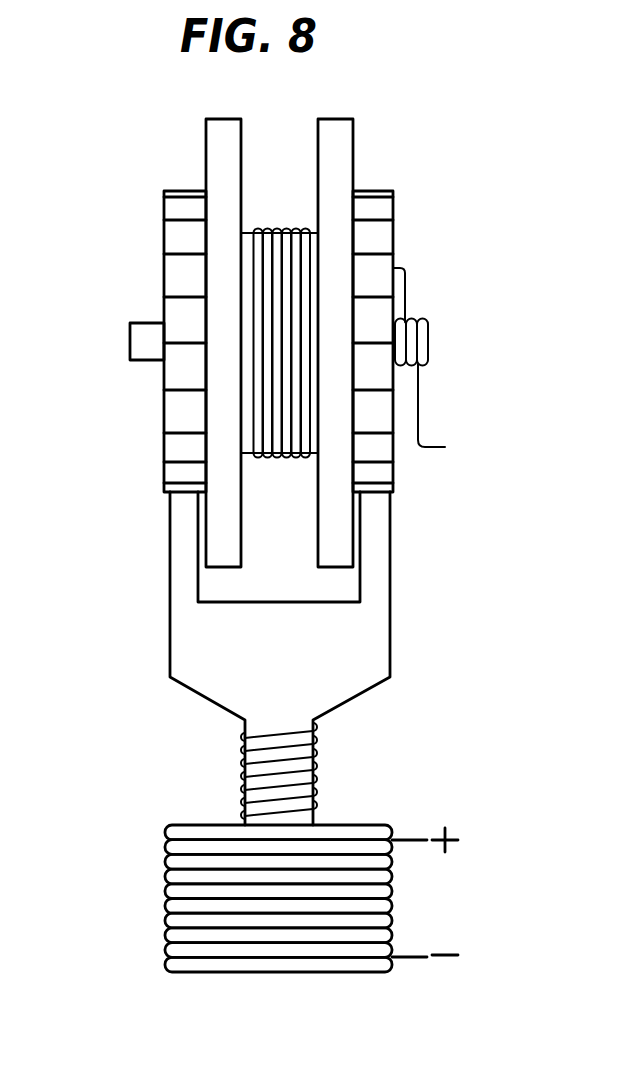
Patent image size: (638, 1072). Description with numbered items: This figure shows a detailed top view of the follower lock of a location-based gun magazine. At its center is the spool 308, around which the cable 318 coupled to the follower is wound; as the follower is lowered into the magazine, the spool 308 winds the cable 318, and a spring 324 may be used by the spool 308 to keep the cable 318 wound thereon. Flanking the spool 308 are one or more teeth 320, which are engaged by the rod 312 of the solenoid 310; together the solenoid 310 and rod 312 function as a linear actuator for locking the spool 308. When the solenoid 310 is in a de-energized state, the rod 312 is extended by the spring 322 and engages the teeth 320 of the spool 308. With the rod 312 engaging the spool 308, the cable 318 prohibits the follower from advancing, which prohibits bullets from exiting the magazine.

The spool 308 is at (345, 147).
The solenoid 310 is at (180, 862).
The rod 312 is at (180, 533).
The cable 318 is at (283, 233).
The teeth 320 is at (178, 243).
The spring 322 is at (320, 790).
The spring 324 is at (420, 412).